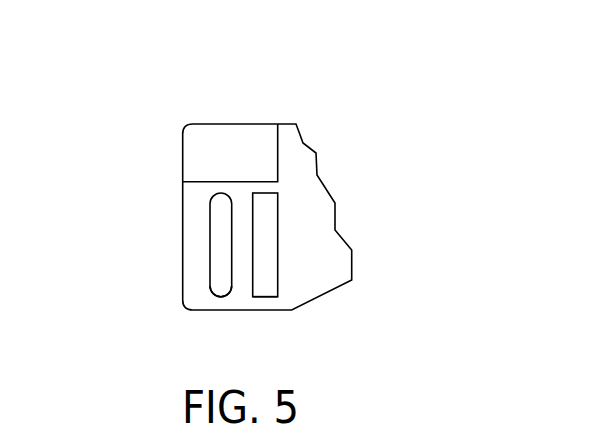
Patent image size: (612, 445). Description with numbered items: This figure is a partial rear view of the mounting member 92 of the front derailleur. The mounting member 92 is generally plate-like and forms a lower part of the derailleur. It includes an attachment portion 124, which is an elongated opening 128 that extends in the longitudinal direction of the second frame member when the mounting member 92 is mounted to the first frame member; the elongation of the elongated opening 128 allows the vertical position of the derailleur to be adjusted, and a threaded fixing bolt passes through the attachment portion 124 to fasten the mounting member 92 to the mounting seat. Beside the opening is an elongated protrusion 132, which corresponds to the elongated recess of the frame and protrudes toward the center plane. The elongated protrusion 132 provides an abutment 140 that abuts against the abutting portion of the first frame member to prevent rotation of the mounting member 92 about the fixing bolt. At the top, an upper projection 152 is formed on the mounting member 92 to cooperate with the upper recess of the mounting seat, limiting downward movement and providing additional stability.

The mounting member 92 is at (320, 243).
The upper projection 152 is at (223, 147).
The attachment portion 124 is at (220, 212).
The elongated opening 128 is at (232, 280).
The elongated protrusion 132 is at (267, 212).
The abutment 140 is at (267, 275).